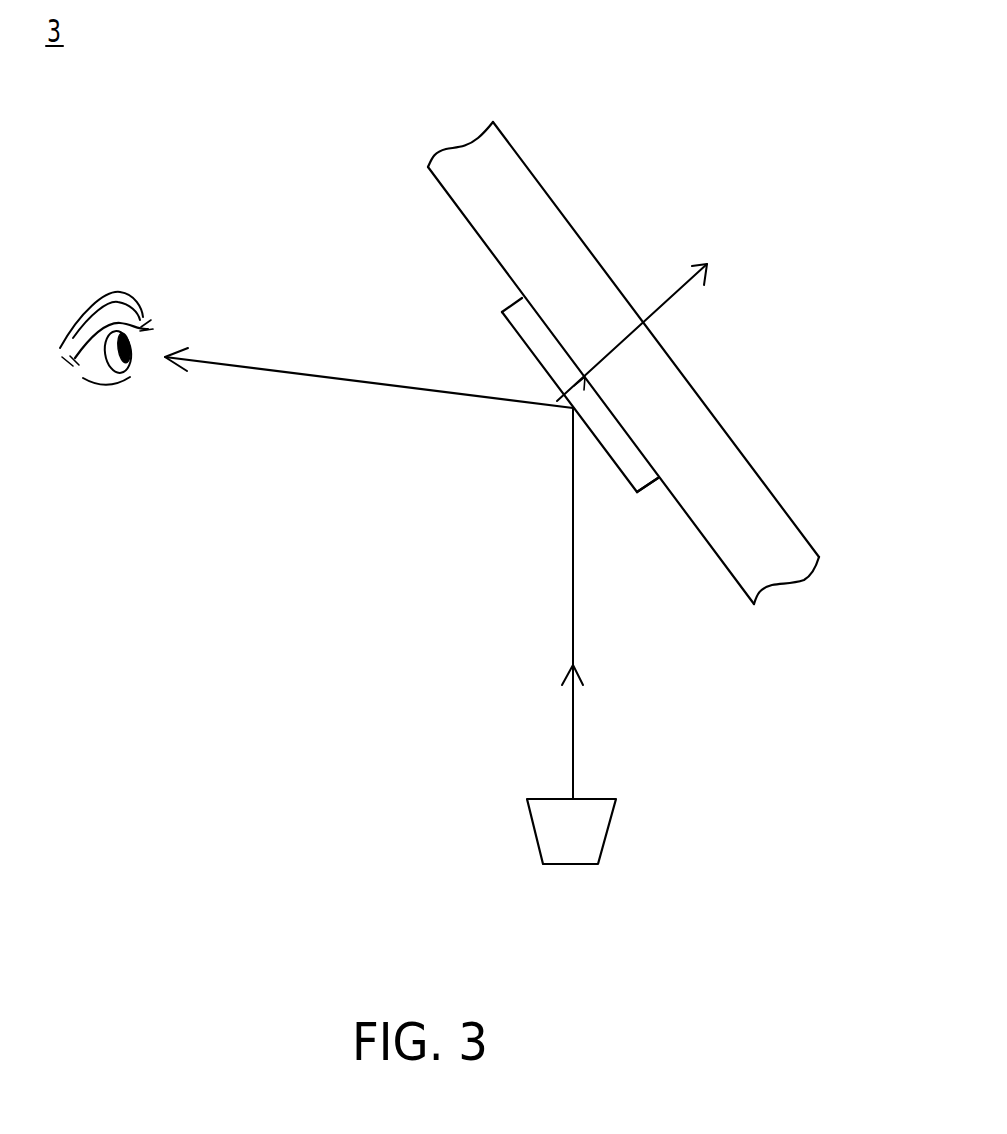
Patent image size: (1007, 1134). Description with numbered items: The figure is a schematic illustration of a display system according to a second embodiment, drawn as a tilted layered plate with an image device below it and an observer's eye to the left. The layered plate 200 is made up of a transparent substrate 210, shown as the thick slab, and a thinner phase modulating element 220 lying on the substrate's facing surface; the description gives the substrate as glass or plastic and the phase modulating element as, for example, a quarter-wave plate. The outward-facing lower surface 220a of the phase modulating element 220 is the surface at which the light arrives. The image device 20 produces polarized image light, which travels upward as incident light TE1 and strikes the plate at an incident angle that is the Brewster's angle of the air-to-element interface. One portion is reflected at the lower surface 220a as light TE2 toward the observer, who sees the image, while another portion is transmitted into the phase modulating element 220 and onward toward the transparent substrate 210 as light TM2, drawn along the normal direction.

The optical panel / display module 200 is at (388, 68).
The substrate plate 210 is at (446, 162).
The optical film layer 220 is at (510, 313).
The surface of optical film 220a is at (640, 476).
The light source / projector 20 is at (610, 830).
The incident TE light ray TE1 is at (599, 603).
The reflected TE light ray TE2 is at (369, 387).
The transmitted TM light ray / normal TM2 is at (663, 332).